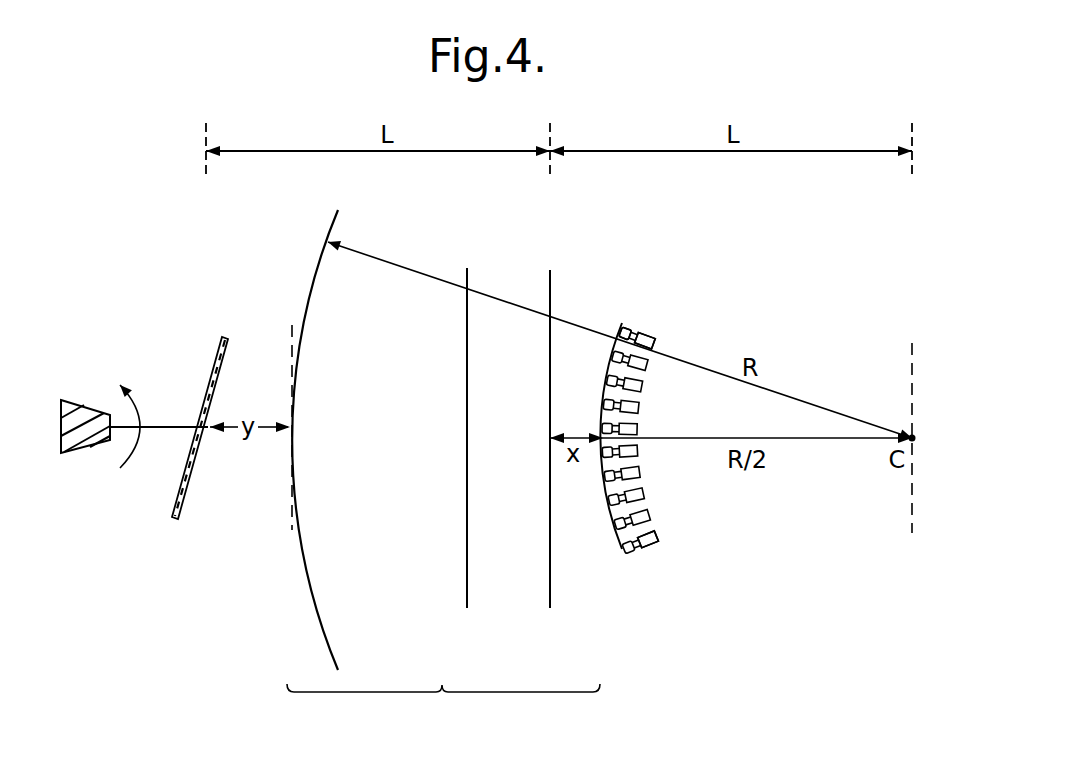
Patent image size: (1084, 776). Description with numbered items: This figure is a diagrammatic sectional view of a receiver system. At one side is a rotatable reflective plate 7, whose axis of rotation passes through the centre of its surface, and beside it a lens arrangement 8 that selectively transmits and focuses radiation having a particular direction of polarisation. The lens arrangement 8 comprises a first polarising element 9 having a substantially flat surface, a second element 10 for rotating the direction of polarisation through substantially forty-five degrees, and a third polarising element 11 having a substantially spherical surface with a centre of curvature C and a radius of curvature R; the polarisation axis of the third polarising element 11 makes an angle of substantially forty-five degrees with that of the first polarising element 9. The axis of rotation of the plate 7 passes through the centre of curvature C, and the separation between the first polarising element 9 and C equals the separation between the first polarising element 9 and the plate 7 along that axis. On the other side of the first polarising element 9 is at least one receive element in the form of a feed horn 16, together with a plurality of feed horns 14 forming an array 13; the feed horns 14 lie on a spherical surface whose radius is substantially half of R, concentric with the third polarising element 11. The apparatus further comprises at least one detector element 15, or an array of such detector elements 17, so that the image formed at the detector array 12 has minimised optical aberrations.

The rotatable reflective plate 7 is at (177, 524).
The lens arrangement 8 is at (443, 500).
The first polarising element 9 is at (550, 274).
The second element 10 is at (467, 272).
The third polarising element 11 is at (338, 219).
The detector array 12 is at (648, 368).
The array 13 is at (632, 560).
The feed horns 14 is at (605, 506).
The detector element 15 is at (652, 337).
The feed horn 16 is at (623, 325).
The array of detector elements 17 is at (660, 552).